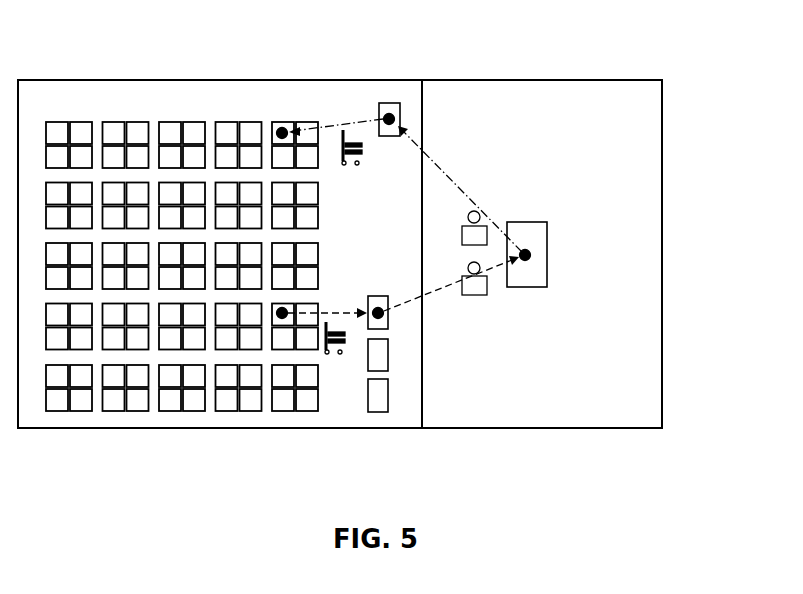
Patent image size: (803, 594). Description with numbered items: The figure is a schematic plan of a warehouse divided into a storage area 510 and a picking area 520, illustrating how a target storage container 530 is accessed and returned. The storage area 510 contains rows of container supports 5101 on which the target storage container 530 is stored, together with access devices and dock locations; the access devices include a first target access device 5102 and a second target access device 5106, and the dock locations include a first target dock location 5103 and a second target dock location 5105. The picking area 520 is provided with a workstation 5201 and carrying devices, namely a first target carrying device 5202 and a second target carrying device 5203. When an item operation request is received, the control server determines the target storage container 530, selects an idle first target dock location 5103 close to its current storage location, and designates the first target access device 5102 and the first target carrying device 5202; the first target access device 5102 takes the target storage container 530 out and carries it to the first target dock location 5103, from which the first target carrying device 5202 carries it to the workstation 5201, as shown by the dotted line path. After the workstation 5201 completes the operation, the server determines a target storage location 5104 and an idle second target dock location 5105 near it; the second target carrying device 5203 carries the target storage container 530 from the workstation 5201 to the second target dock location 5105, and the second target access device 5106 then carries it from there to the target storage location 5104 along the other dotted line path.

The storage area 510 is at (128, 92).
The picking area 520 is at (604, 92).
The container supports 5101 is at (82, 128).
The first target access device 5102 is at (338, 352).
The first target dock location 5103 is at (381, 329).
The target storage location 5104 is at (281, 128).
The second target dock location 5105 is at (386, 103).
The second target access device 5106 is at (343, 130).
The target storage container 530 is at (282, 318).
The workstation 5201 is at (547, 251).
The first target carrying device 5202 is at (487, 283).
The second target carrying device 5203 is at (487, 233).